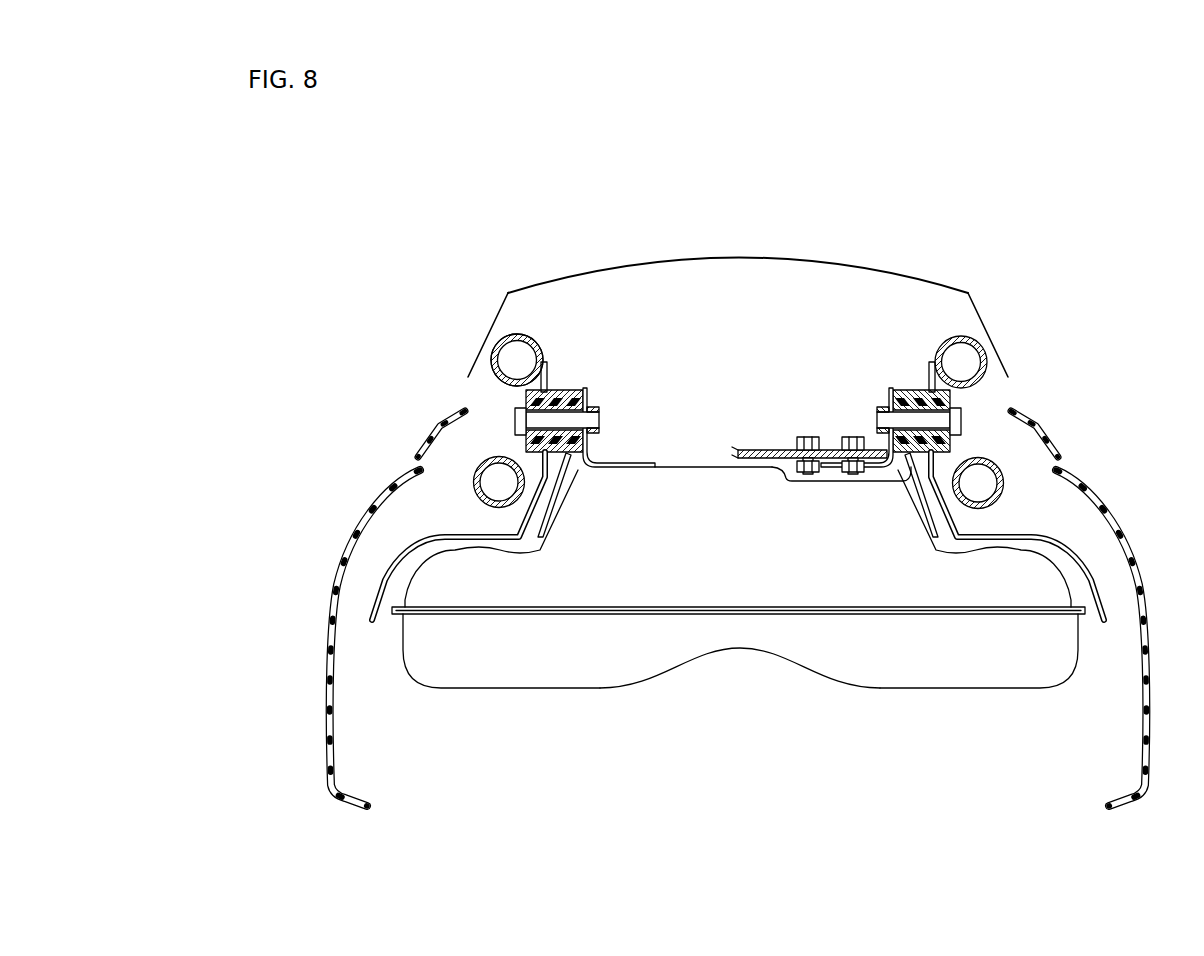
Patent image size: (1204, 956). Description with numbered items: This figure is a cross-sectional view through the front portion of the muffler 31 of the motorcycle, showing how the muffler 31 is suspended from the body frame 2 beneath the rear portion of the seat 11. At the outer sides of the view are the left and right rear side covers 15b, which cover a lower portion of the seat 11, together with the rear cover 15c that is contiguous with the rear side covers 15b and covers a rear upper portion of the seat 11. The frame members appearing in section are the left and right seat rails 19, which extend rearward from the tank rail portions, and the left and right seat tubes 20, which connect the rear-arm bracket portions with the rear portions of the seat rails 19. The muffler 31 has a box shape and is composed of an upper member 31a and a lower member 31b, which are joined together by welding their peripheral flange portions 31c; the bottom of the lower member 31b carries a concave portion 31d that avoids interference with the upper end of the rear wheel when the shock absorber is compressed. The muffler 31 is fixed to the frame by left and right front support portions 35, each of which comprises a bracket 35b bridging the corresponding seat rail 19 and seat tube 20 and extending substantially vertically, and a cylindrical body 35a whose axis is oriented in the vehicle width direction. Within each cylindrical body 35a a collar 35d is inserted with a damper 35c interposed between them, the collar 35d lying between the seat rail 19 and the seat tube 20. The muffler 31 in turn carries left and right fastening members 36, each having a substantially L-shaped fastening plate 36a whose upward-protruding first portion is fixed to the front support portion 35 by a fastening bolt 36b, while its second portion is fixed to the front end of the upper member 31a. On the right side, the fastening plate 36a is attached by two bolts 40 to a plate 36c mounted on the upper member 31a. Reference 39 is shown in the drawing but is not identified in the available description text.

The body frame 2 is at (517, 330).
The seat 11 is at (857, 262).
The rear side cover 15b is at (355, 530).
The rear cover 15c is at (440, 440).
The seat rail 19 is at (497, 343).
The seat tube 20 is at (497, 455).
The muffler 31 is at (738, 592).
The upper member 31a is at (705, 466).
The lower member 31b is at (505, 690).
The flange portion 31c is at (580, 615).
The concave portion 31d is at (760, 652).
The front support portion 35 is at (738, 423).
The cylindrical body 35a is at (570, 389).
The bracket 35b is at (547, 362).
The damper 35c is at (577, 482).
The collar 35d is at (565, 488).
The fastening member 36 is at (747, 423).
The fastening plate 36a is at (588, 446).
The fastening bolt 36b is at (512, 412).
The plate 36c is at (787, 481).
The plate 39 is at (755, 449).
The bolt 40 is at (852, 435).